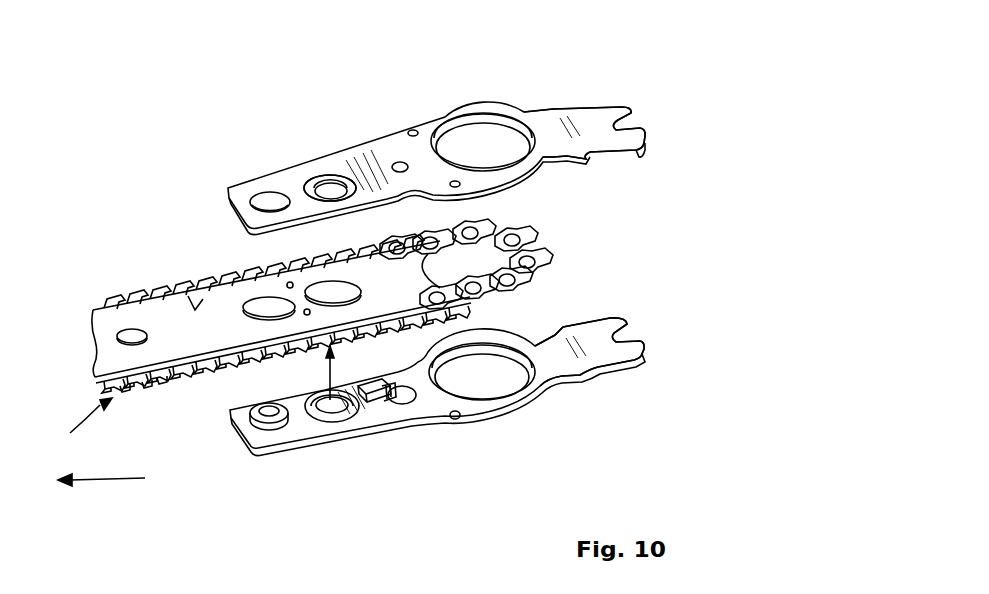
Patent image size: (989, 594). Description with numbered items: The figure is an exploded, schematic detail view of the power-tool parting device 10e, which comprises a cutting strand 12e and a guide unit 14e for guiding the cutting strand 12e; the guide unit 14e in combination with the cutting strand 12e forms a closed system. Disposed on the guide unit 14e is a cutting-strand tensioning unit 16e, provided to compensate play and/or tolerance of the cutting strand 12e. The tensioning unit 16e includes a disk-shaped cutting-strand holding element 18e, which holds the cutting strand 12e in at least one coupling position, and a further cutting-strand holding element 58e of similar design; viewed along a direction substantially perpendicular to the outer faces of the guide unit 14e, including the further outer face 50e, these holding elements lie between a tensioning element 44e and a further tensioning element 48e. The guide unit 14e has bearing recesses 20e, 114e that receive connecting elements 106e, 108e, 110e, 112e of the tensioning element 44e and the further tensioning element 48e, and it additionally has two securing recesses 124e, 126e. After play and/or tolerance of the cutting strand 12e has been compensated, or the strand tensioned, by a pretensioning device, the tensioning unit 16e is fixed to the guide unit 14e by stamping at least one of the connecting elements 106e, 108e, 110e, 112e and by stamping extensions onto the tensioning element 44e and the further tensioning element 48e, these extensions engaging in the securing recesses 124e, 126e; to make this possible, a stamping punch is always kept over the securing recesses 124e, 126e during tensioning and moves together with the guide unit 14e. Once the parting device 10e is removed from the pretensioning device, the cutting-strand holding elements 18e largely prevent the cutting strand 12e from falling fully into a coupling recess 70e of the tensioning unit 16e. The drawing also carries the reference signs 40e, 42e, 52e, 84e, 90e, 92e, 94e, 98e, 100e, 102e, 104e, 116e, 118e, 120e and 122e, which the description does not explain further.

The power-tool parting device 10e is at (112, 148).
The cutting strand 12e is at (202, 372).
The guide unit 14e is at (145, 318).
The cutting-strand tensioning unit 16e is at (598, 80).
The cutting-strand holding element 18e is at (512, 382).
The bearing recess 20e is at (258, 300).
The longitudinal direction 40e is at (100, 480).
The saw chain 42e is at (630, 228).
The tensioning element 44e is at (562, 378).
The further tensioning element 48e is at (548, 125).
The further outer face 50e is at (191, 295).
The tab 52e is at (366, 402).
The further cutting-strand holding element 58e is at (504, 133).
The coupling recess 70e is at (477, 142).
The opening 84e is at (333, 194).
The opening 90e is at (403, 397).
The opening 92e is at (400, 165).
The bent tab 94e is at (385, 403).
The rivet 98e is at (457, 420).
The rivet 100e is at (460, 185).
The direction arrow 102e is at (412, 358).
The rivet 104e is at (413, 130).
The connecting element 106e is at (253, 422).
The connecting element 108e is at (270, 200).
The connecting element 110e is at (320, 420).
The connecting element 112e is at (312, 183).
The bearing recess 114e is at (329, 282).
The direction arrow 116e is at (75, 425).
The drive link 118e is at (150, 390).
The connecting link 120e is at (125, 392).
The cutting link 122e is at (160, 384).
The securing recess 124e is at (307, 316).
The securing recess 126e is at (287, 286).